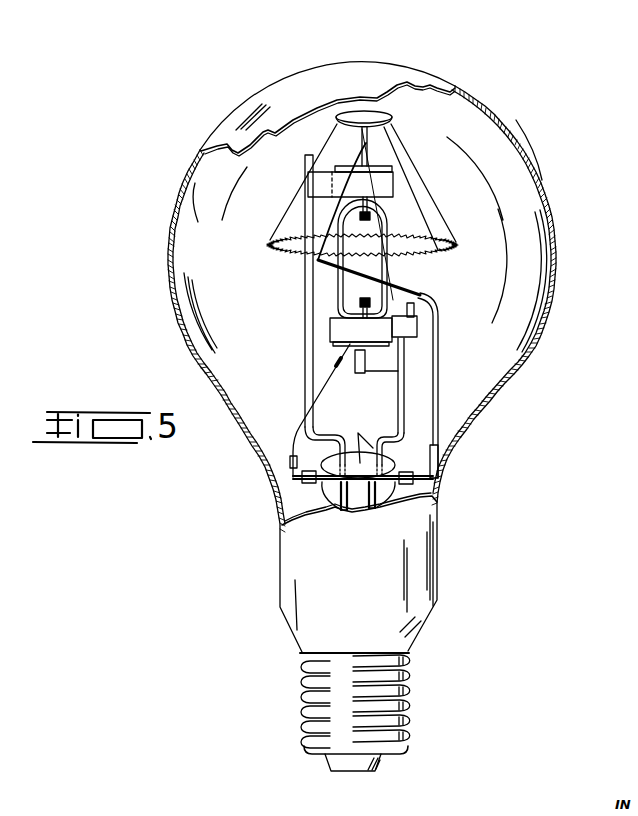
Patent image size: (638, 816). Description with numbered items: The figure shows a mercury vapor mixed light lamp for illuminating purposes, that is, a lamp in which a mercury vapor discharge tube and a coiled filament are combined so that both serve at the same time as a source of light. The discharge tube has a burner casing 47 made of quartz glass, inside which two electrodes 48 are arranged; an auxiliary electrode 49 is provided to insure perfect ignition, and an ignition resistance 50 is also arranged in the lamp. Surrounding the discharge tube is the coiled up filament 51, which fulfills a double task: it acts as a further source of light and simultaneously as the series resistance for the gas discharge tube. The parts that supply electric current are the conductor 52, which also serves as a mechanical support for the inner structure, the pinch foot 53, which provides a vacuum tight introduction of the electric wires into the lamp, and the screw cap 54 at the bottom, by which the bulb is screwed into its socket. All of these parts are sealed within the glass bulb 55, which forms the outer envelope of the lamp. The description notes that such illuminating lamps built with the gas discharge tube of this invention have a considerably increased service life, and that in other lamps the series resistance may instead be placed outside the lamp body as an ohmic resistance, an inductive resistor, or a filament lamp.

The burner casing 47 is at (372, 233).
The electrodes 48 is at (375, 297).
The auxiliary electrode 49 is at (338, 307).
The ignition resistance 50 is at (318, 485).
The coiled up filament 51 is at (290, 249).
The conductor 52 is at (305, 365).
The pinch foot 53 is at (352, 500).
The screw cap 54 is at (406, 690).
The glass bulb 55 is at (372, 77).